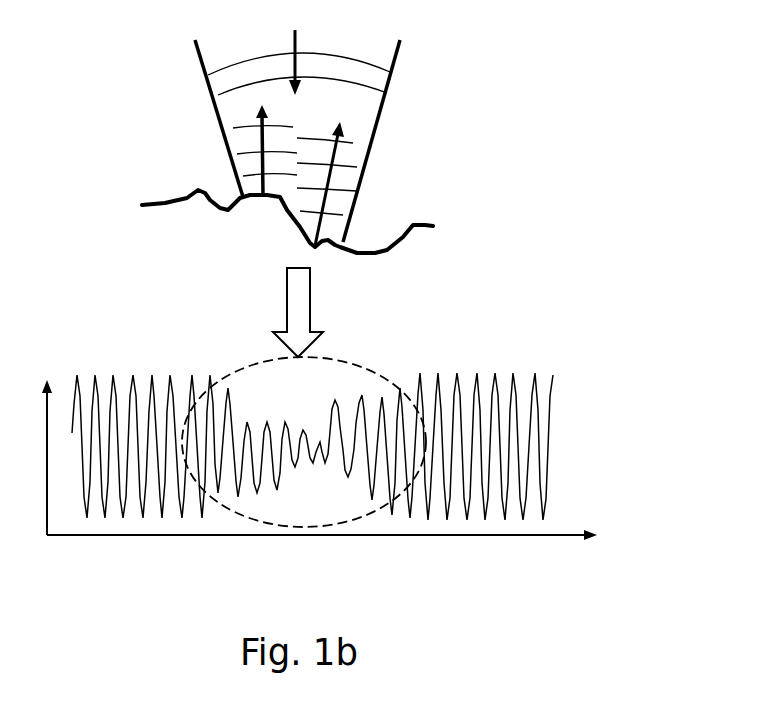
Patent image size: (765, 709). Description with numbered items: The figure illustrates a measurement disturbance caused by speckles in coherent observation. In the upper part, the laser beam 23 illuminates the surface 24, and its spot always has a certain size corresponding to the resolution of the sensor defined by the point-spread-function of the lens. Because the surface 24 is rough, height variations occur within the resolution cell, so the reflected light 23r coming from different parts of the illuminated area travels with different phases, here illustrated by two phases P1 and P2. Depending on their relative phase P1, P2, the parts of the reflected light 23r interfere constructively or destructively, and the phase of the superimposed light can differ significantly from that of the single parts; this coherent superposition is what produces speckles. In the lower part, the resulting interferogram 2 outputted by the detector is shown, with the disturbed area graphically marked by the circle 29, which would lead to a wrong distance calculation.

The interferogram 2 is at (317, 437).
The laser beam 23 is at (350, 74).
The reflected light 23r is at (349, 180).
The first phase P1 is at (243, 130).
The second phase P2 is at (353, 143).
The surface 24 is at (258, 222).
The circle 29 is at (252, 360).